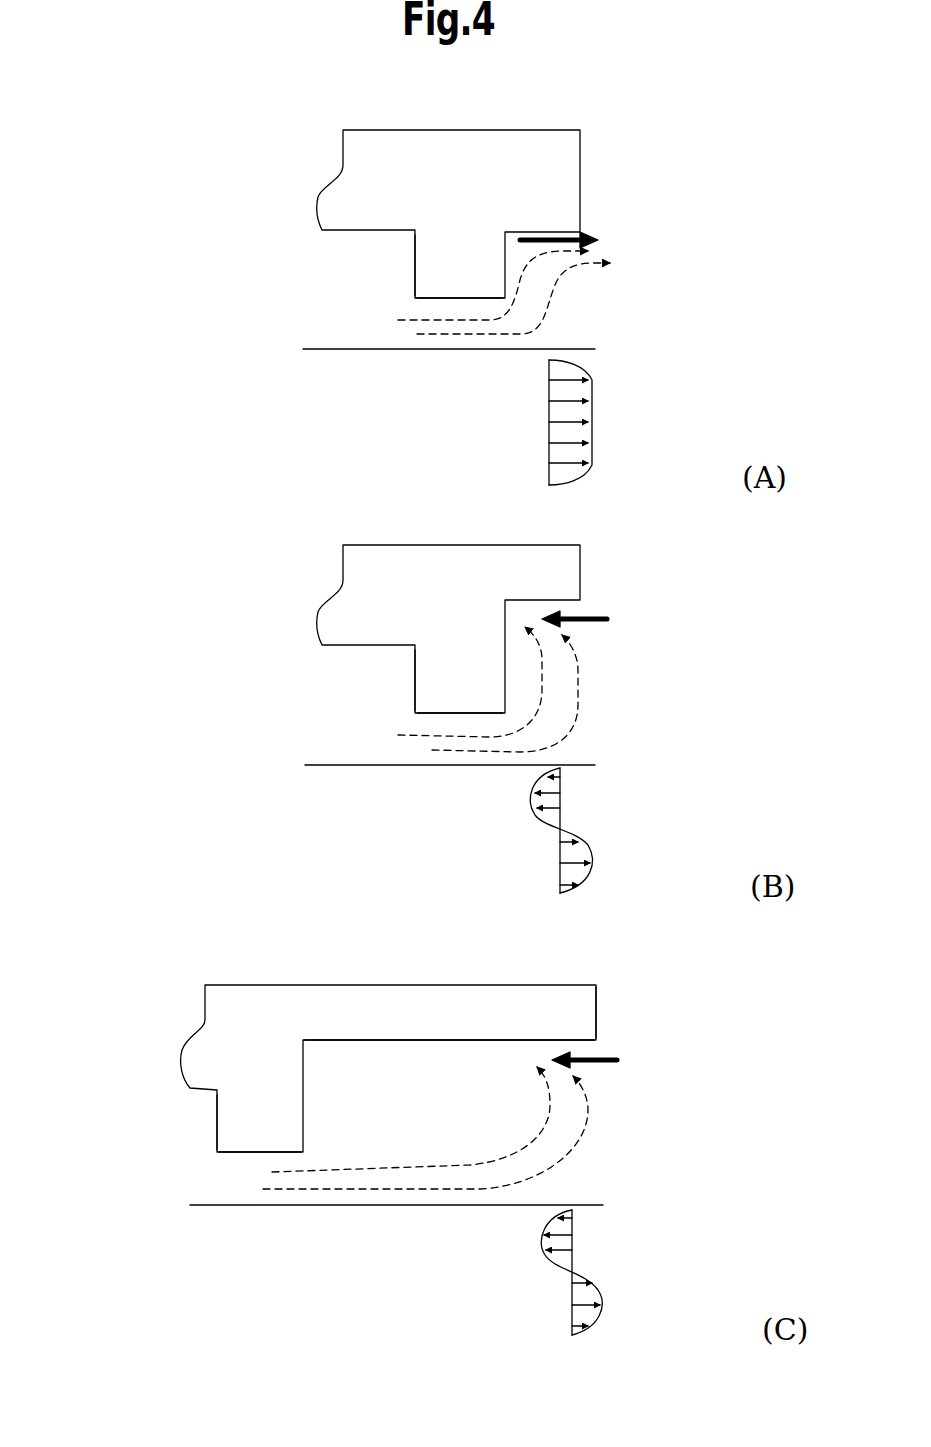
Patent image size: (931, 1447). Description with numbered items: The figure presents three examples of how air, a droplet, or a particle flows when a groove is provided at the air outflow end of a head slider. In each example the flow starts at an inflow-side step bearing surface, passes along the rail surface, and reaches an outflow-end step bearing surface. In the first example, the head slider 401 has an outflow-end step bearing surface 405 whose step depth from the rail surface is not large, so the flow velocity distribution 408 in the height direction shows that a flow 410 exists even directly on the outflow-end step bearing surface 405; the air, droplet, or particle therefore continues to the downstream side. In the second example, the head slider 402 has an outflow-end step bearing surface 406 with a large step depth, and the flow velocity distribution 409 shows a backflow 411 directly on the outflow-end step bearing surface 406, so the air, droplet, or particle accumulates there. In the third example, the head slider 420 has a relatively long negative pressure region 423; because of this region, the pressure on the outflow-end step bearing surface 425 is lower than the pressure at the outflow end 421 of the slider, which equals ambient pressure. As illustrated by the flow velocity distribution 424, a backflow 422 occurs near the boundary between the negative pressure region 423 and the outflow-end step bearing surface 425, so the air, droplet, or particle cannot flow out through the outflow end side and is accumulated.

The head slider 401 is at (502, 212).
The head slider 402 is at (492, 628).
The flow 410 is at (587, 230).
The outflow-end step bearing surface 405 is at (565, 288).
The flow velocity distribution 408 is at (534, 422).
The backflow 411 is at (607, 618).
The outflow-end step bearing surface 406 is at (563, 692).
The flow velocity distribution 409 is at (529, 830).
The head slider 420 is at (357, 1023).
The outflow end 421 is at (608, 1017).
The backflow 422 is at (613, 1074).
The negative pressure region 423 is at (467, 1107).
The outflow-end step bearing surface 425 is at (593, 1143).
The flow velocity distribution 424 is at (539, 1272).